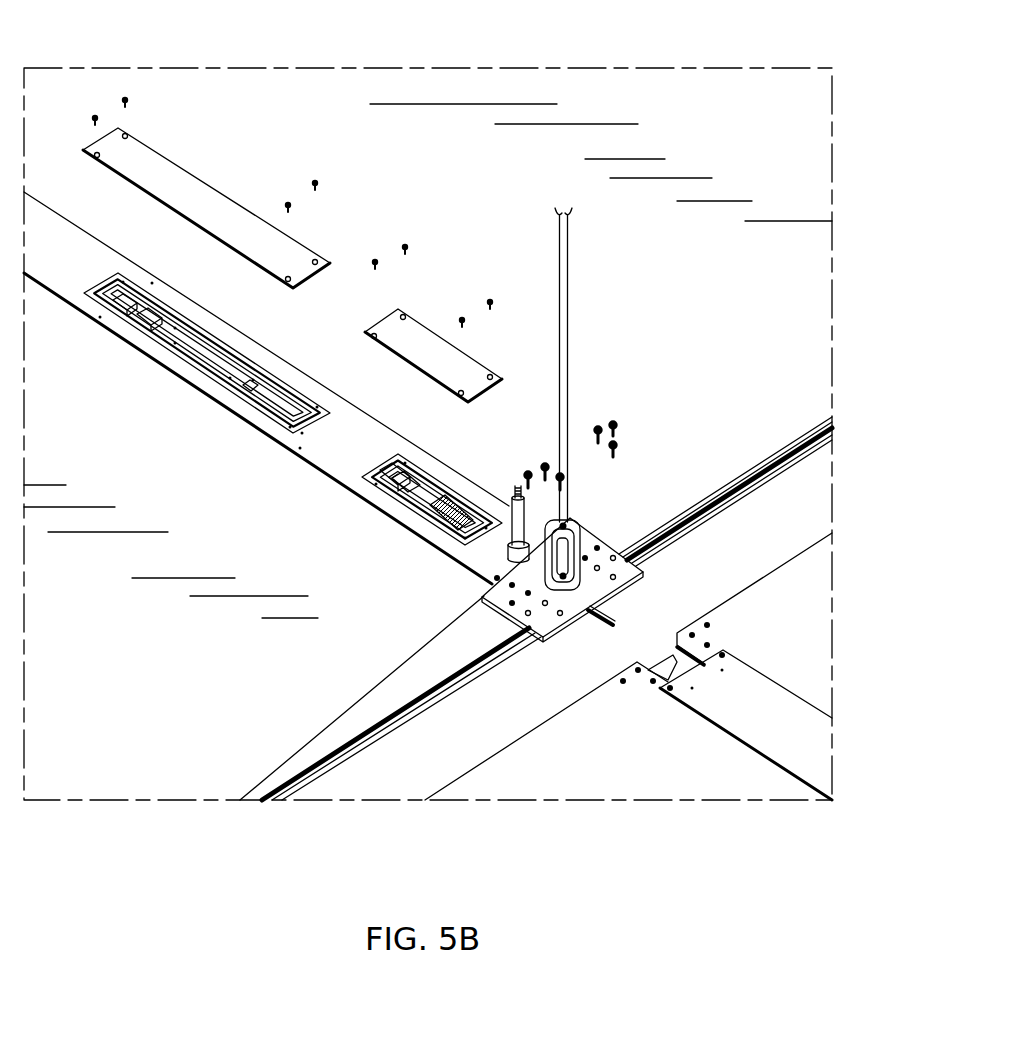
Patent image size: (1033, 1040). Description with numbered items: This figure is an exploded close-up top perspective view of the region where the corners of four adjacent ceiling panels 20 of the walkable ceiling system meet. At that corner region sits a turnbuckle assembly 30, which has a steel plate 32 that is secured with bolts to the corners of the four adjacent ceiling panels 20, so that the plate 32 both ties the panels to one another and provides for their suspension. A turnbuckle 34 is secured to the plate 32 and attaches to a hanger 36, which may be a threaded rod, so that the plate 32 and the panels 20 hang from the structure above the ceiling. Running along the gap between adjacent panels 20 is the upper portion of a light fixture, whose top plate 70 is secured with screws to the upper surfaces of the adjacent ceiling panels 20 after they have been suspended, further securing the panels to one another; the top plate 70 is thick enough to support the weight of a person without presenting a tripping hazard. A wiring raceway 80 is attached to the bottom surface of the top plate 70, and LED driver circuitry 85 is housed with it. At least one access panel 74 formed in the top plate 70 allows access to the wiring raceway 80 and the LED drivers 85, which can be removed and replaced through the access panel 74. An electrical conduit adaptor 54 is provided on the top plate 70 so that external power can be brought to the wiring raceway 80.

The ceiling panel 20 is at (655, 135).
The turnbuckle assembly 30 is at (589, 503).
The steel plate 32 is at (484, 597).
The turnbuckle 34 is at (586, 542).
The hanger 36 is at (570, 215).
The electrical conduit adaptor 54 is at (517, 550).
The top plate 70 is at (287, 375).
The access panel 74 is at (192, 207).
The wiring raceway 80 is at (218, 363).
The LED driver circuitry 85 is at (392, 478).